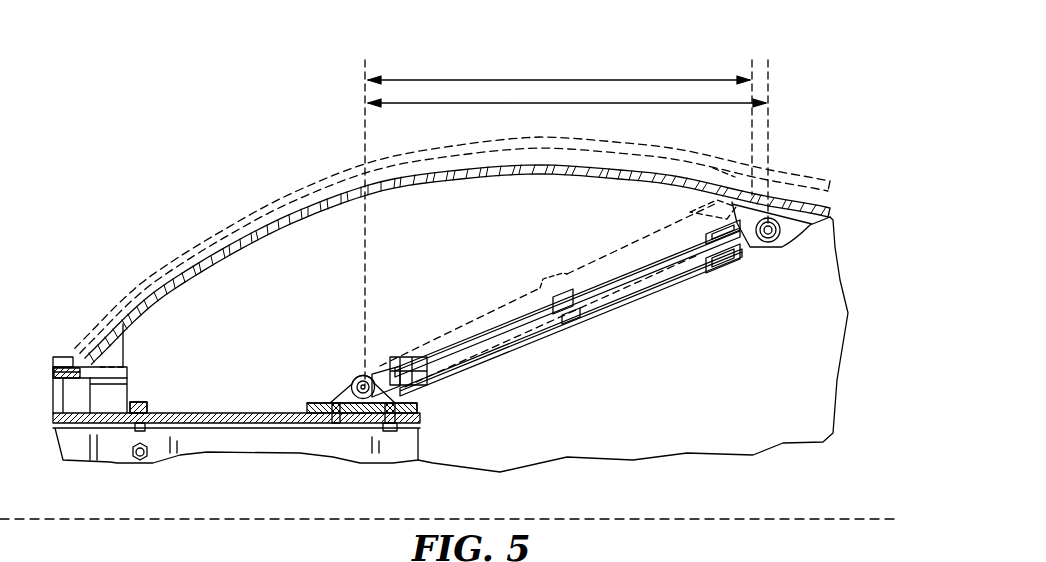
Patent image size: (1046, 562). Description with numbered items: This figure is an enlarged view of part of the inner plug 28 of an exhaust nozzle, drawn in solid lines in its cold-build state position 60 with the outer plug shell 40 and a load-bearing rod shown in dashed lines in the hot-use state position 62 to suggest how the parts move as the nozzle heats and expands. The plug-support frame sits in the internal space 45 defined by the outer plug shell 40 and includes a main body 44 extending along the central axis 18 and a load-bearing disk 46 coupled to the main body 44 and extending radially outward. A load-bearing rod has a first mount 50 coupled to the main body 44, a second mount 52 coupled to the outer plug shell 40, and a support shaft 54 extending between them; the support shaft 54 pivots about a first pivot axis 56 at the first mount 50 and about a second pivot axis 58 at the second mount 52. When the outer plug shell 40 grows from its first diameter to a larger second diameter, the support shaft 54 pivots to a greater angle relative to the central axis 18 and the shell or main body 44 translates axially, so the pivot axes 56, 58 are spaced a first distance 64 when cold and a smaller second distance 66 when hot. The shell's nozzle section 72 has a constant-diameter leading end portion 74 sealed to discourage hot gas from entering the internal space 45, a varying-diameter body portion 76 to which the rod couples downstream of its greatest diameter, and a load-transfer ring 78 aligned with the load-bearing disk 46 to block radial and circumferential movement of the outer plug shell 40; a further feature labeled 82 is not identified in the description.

The central axis 18 is at (846, 517).
The inner plug 28 is at (452, 203).
The outer plug shell 40 is at (655, 166).
The main body 44 is at (228, 455).
The internal space 45 is at (606, 389).
The load-bearing disk 46 is at (152, 380).
The first mount 50 is at (328, 377).
The second mount 52 is at (822, 233).
The support shaft 54 is at (650, 320).
The first pivot axis 56 is at (355, 370).
The second pivot axis 58 is at (780, 233).
The cold-build state position 60 is at (470, 158).
The hot-use state position 62 is at (622, 132).
The first distance 64 is at (417, 106).
The second distance 66 is at (586, 80).
The nozzle section 72 is at (761, 554).
The leading end portion 74 is at (57, 345).
The body portion 76 is at (300, 213).
The load-transfer ring 78 is at (137, 338).
The frame member 82 is at (641, 554).